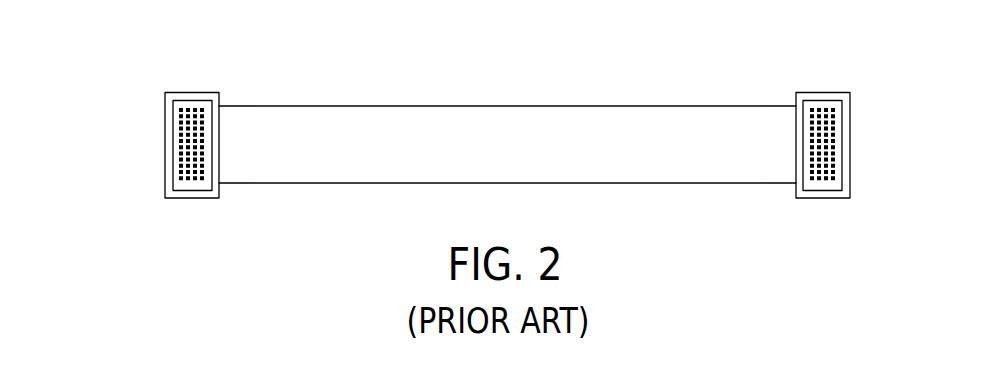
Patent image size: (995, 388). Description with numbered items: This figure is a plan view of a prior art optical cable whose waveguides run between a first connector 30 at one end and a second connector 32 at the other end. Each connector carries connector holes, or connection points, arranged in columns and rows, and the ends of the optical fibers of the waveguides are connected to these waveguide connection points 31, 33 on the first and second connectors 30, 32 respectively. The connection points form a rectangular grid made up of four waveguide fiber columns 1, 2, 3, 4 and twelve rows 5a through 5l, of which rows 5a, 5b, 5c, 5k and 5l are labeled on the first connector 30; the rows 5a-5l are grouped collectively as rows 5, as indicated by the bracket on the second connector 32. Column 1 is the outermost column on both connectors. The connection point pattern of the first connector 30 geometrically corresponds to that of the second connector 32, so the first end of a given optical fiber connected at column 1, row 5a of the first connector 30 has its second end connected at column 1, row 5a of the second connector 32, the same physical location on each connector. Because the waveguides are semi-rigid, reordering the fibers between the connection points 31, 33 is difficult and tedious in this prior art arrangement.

The waveguide fiber column 1 is at (181, 108).
The waveguide fiber column 2 is at (188, 108).
The waveguide fiber column 3 is at (195, 108).
The waveguide fiber column 4 is at (202, 108).
The rows 5 is at (862, 107).
The row 5a is at (181, 110).
The row 5b is at (181, 116).
The row 5c is at (181, 122).
The row 5k is at (181, 172).
The row 5l is at (181, 178).
The first connector 30 is at (188, 198).
The waveguide connection points 31 is at (173, 100).
The second connector 32 is at (825, 198).
The waveguide connection points 33 is at (803, 101).